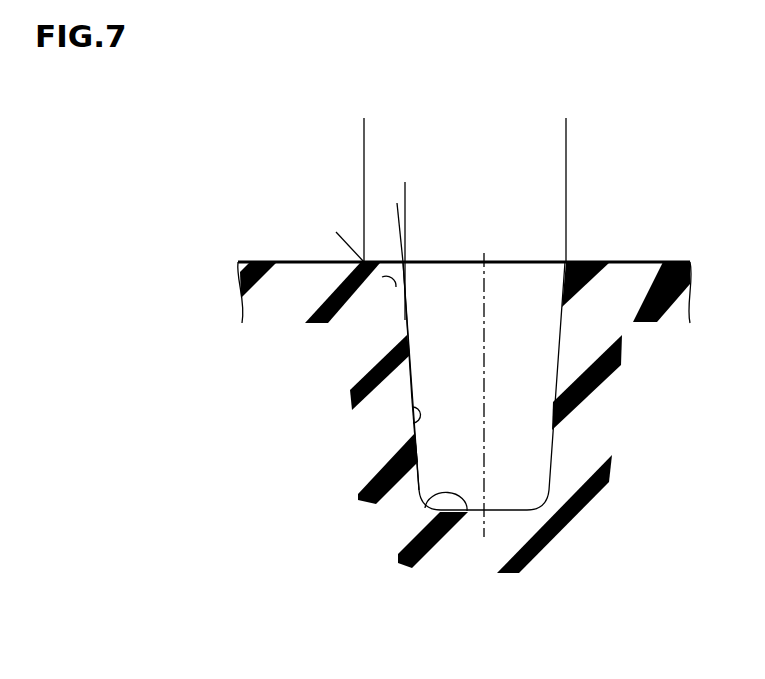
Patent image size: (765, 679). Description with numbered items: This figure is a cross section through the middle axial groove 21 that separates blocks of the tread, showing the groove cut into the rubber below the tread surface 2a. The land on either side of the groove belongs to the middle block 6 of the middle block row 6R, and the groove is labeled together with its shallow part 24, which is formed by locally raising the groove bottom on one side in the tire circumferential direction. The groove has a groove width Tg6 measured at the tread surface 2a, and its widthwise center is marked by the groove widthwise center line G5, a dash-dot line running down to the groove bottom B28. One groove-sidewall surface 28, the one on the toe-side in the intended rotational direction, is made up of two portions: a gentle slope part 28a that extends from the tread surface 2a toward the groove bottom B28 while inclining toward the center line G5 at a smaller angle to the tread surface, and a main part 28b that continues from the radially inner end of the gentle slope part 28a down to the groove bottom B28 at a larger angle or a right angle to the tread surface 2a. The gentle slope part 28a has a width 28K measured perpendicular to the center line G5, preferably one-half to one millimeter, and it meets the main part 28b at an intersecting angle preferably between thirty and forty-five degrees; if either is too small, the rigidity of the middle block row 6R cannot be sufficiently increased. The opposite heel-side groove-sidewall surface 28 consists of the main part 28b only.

The tread surface 2a is at (648, 262).
The middle block 6 is at (469, 417).
The middle block row 6R is at (700, 410).
The middle axial groove 21 is at (484, 383).
The shallow part 24 is at (484, 383).
The groove-sidewall surface 28 is at (300, 376).
The gentle slope part 28a is at (398, 283).
The main part 28b is at (412, 423).
The width of the gentle slope part 28K is at (438, 189).
The groove bottom B28 is at (428, 506).
The groove widthwise center line G5 is at (478, 383).
The groove width Tg6 is at (566, 123).